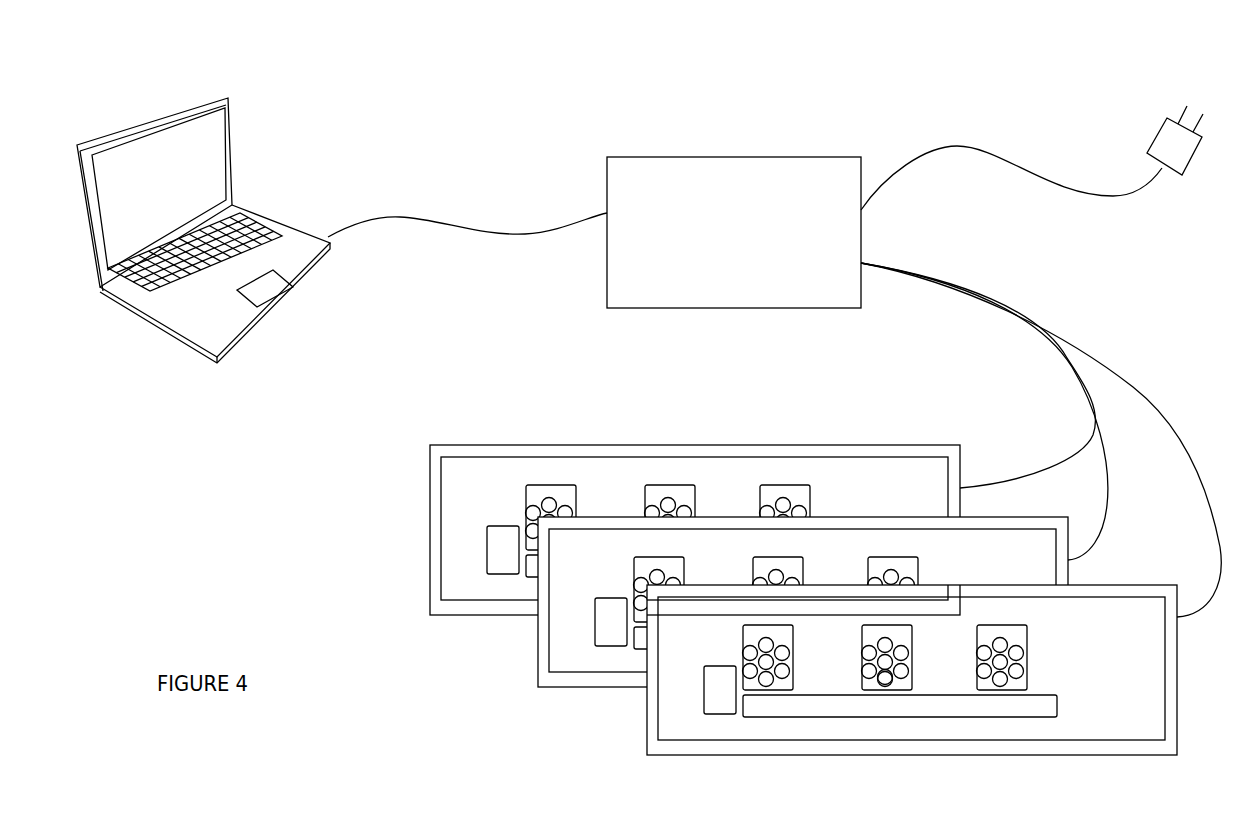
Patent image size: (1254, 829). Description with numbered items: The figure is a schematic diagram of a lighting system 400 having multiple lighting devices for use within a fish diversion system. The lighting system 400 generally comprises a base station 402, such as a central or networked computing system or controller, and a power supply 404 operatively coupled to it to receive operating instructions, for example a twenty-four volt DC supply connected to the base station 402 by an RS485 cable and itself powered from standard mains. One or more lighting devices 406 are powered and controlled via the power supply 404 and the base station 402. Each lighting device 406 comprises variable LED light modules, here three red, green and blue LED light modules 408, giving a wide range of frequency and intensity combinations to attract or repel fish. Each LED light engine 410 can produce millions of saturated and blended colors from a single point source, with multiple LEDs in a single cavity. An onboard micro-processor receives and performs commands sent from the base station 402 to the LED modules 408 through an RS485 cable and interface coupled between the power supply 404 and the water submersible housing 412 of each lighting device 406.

The lighting system 400 is at (556, 102).
The base station 402 is at (281, 298).
The power supply 404 is at (668, 308).
The lighting device 406 is at (410, 508).
The LED light module 408 is at (1026, 643).
The LED light engine 410 is at (887, 677).
The water submersible housing 412 is at (565, 683).